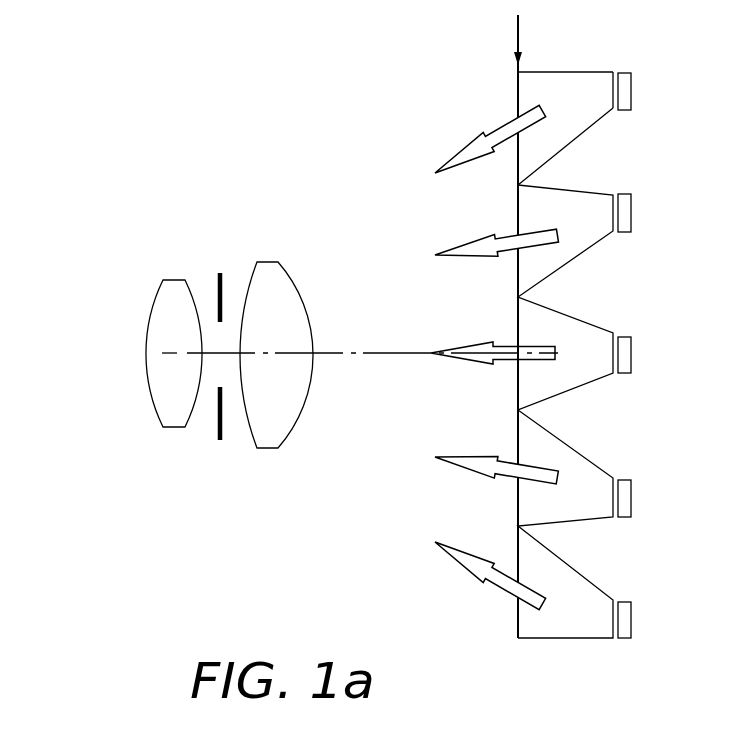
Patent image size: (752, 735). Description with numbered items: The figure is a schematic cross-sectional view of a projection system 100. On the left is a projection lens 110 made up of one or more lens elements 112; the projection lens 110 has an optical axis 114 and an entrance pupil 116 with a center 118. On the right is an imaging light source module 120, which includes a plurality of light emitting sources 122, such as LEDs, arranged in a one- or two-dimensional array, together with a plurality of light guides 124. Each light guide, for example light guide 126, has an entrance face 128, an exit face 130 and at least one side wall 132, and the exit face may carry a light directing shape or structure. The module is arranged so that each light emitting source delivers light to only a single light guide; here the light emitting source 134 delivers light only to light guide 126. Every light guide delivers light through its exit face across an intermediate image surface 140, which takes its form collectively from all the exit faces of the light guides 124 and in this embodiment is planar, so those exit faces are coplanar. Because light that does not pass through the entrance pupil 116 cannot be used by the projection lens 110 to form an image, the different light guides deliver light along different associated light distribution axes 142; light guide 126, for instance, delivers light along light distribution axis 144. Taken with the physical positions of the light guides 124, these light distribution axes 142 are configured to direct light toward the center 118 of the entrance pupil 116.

The projection system 100 is at (258, 148).
The projection lens 110 is at (313, 499).
The lens elements 112 is at (250, 430).
The optical axis 114 is at (336, 352).
The entrance pupil 116 is at (220, 328).
The center 118 is at (222, 352).
The imaging light source module 120 is at (637, 647).
The light emitting sources 122 is at (633, 213).
The light guides 124 is at (578, 507).
The light guide 126 is at (567, 82).
The entrance face 128 is at (612, 80).
The exit face 130 is at (518, 88).
The side wall 132 is at (573, 143).
The light emitting source 134 is at (633, 91).
The intermediate image surface 140 is at (518, 44).
The light distribution axes 142 is at (477, 362).
The light distribution axis 144 is at (470, 150).